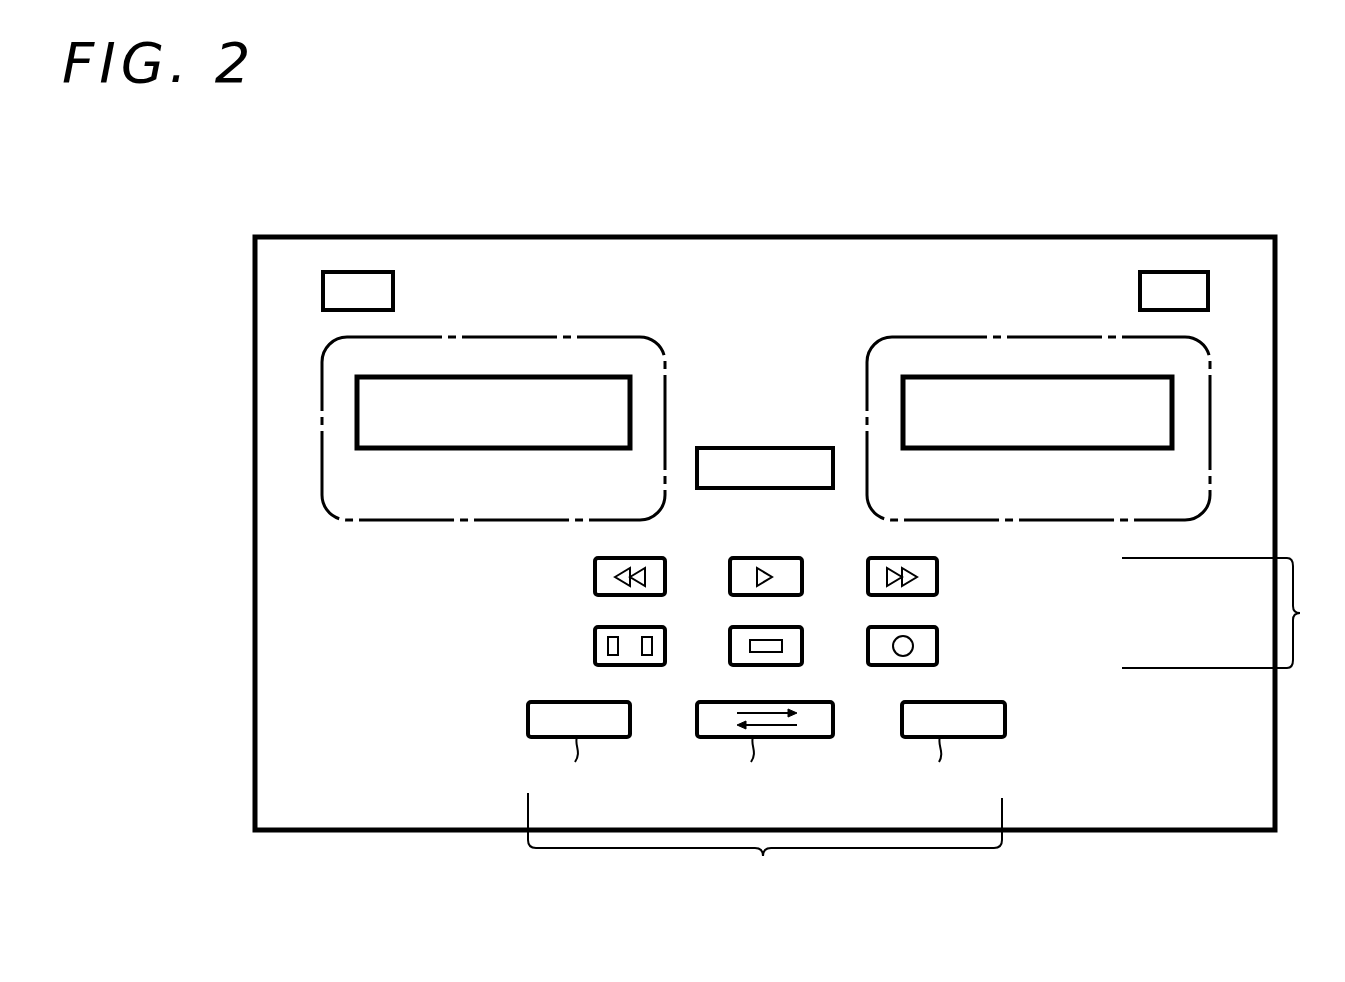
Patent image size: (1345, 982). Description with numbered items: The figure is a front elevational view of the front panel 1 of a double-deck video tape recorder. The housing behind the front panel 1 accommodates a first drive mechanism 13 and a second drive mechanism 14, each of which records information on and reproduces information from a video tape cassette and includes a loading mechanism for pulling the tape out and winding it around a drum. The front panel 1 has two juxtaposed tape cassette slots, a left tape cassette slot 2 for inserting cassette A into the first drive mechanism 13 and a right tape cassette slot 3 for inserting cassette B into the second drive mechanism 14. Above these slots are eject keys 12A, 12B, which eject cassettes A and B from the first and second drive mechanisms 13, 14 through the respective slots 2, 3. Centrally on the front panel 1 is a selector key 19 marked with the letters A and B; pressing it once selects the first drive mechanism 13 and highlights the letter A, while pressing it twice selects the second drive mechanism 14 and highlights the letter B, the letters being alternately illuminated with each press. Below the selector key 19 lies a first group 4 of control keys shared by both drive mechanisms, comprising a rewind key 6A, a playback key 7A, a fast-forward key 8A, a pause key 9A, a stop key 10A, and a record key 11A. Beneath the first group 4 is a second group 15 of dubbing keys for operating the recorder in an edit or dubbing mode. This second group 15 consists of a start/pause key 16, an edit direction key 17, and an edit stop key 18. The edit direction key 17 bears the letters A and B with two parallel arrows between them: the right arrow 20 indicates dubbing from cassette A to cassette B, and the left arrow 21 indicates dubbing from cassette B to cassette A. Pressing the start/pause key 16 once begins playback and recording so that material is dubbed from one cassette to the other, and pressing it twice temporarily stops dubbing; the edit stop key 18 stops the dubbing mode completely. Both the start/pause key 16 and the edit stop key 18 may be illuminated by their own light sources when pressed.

The front panel 1 is at (973, 237).
The left tape cassette slot 2 is at (357, 400).
The right tape cassette slot 3 is at (1172, 416).
The first group of control keys 4 is at (1223, 613).
The rewind key 6A is at (595, 575).
The playback key 7A is at (762, 558).
The fast-forward key 8A is at (937, 578).
The pause key 9A is at (595, 642).
The stop key 10A is at (730, 640).
The record key 11A is at (937, 648).
The eject key 12A is at (370, 272).
The eject key 12B is at (1180, 272).
The first drive mechanism 13 is at (613, 337).
The second drive mechanism 14 is at (896, 337).
The second group of dubbing keys 15 is at (765, 839).
The start/pause key 16 is at (528, 712).
The edit direction key 17 is at (697, 714).
The edit stop key 18 is at (1005, 718).
The selector key 19 is at (765, 448).
The right arrow 20 is at (770, 709).
The left arrow 21 is at (757, 728).